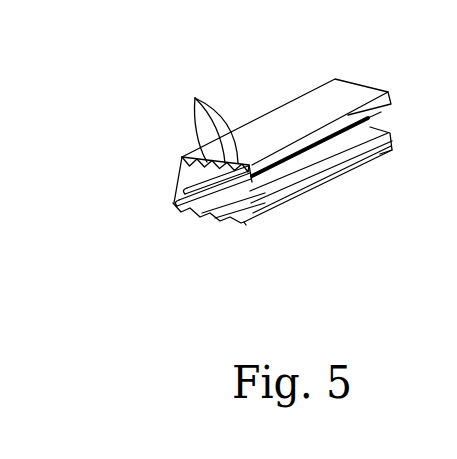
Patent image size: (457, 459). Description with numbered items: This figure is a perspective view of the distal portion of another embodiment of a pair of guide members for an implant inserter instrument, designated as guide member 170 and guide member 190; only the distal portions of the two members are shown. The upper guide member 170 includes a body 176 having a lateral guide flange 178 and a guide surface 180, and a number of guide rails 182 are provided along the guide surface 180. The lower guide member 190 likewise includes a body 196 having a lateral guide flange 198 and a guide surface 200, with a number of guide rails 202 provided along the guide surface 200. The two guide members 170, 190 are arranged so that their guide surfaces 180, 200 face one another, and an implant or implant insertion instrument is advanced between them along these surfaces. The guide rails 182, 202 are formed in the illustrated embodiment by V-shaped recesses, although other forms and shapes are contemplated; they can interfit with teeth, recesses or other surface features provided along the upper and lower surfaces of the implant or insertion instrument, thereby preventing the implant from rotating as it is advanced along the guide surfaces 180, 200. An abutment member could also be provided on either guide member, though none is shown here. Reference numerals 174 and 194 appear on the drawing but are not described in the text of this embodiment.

The guide member 170 is at (278, 121).
The end edge 174 is at (182, 157).
The body 176 is at (308, 95).
The lateral guide flange 178 is at (387, 93).
The guide surface 180 is at (182, 167).
The guide rails 182 is at (195, 98).
The guide member 190 is at (227, 232).
The groove 194 is at (176, 212).
The body 196 is at (350, 168).
The lateral guide flange 198 is at (180, 197).
The guide surface 200 is at (305, 192).
The guide rails 202 is at (210, 214).